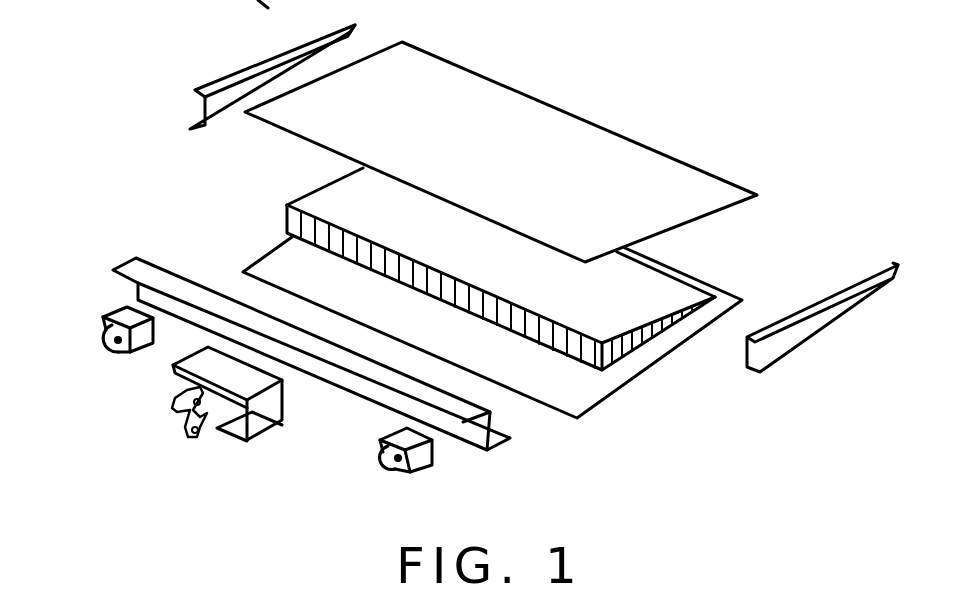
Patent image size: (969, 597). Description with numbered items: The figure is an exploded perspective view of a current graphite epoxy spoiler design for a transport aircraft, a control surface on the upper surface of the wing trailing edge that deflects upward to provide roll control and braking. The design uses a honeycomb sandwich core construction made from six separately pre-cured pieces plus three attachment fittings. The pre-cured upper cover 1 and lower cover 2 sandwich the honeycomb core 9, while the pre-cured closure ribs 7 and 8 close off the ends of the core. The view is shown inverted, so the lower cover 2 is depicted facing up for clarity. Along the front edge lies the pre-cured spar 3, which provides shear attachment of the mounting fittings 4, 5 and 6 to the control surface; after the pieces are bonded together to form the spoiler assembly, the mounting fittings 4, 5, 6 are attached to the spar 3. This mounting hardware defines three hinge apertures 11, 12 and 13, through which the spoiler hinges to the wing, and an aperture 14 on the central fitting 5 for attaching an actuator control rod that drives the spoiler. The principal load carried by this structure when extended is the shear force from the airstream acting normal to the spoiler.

The upper cover 1 is at (545, 120).
The lower cover 2 is at (587, 400).
The spar 3 is at (165, 280).
The mounting fitting 4 is at (122, 315).
The mounting fitting 5 is at (195, 365).
The mounting fitting 6 is at (398, 435).
The closure rib 7 is at (287, 66).
The closure rib 8 is at (797, 327).
The honeycomb core 9 is at (658, 283).
The hinge aperture 11 is at (102, 347).
The hinge aperture 12 is at (188, 430).
The hinge aperture 13 is at (390, 462).
The actuator control rod aperture 14 is at (215, 418).